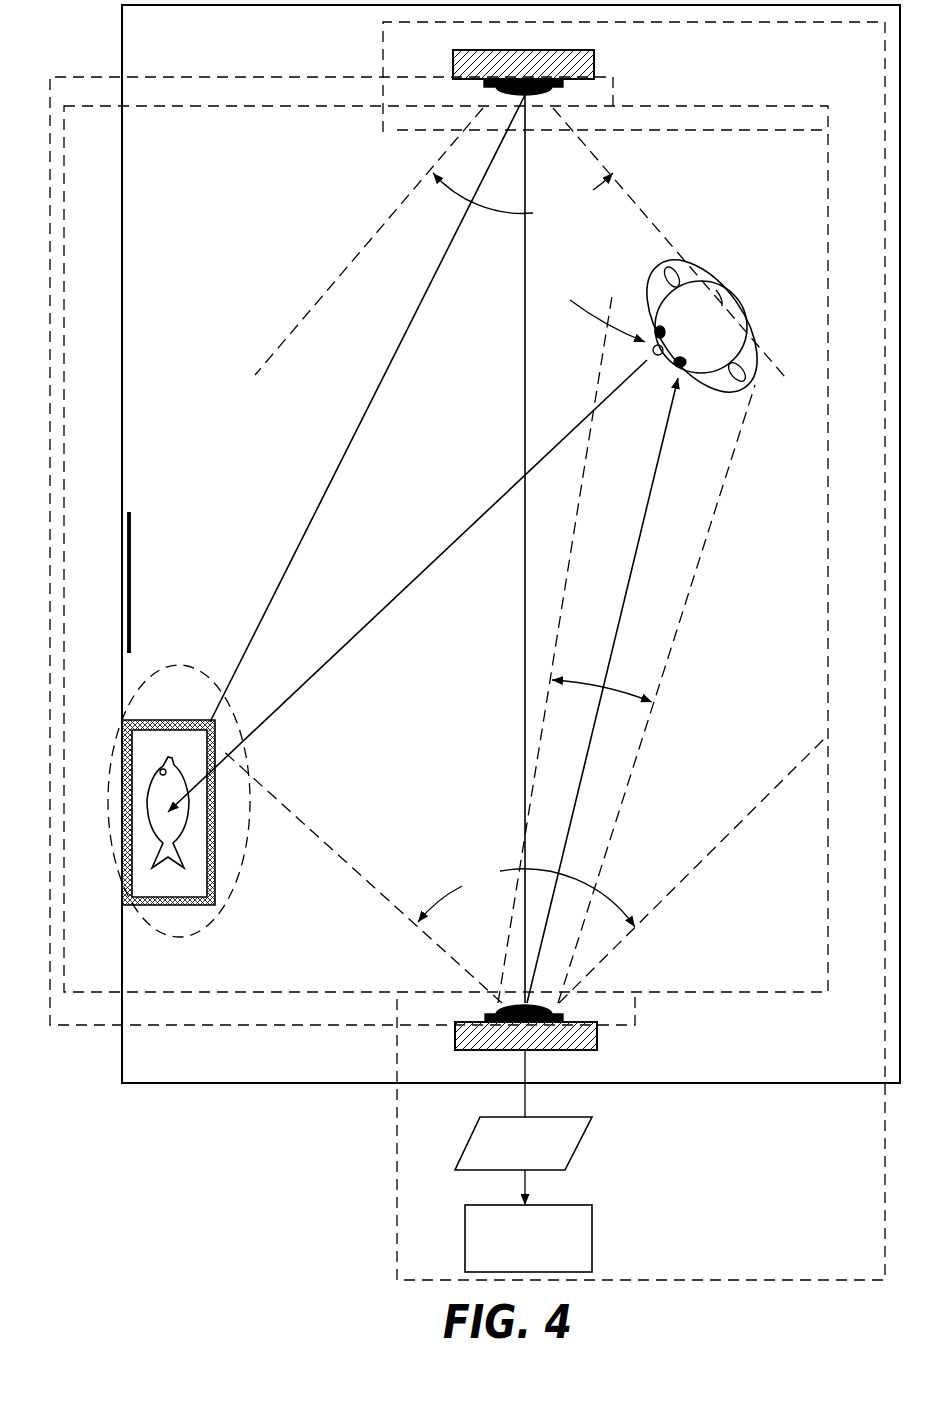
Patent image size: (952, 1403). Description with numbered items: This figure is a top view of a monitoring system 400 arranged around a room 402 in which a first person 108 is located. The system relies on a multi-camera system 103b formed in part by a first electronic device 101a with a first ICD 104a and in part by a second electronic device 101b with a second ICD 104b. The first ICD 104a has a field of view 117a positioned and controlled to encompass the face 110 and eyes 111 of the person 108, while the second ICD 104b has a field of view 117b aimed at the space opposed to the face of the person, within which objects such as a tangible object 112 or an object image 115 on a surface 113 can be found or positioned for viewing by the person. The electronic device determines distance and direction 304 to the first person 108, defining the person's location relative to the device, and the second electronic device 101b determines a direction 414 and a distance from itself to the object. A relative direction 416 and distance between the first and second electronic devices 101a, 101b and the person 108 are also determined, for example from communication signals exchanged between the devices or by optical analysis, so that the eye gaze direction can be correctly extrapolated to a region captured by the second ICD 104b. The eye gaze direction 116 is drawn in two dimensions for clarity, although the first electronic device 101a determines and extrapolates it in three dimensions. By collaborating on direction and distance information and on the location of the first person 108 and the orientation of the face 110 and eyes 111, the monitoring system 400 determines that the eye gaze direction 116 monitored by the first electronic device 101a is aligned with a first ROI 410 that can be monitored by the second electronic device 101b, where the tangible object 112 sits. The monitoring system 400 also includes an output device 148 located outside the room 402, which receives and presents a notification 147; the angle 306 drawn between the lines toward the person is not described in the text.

The room 402 is at (168, 43).
The monitoring system 400 is at (811, 1265).
The multi-camera system 103b is at (345, 100).
The first electronic device 101a is at (598, 1035).
The second electronic device 101b is at (596, 64).
The first ICD 104a is at (562, 1013).
The second ICD 104b is at (565, 88).
The relative direction 416 is at (526, 255).
The field of view of first ICD 117a is at (524, 869).
The field of view of second ICD 117b is at (533, 213).
The distance and direction to first person 304 is at (700, 560).
The angle of narrowed field of view 306 is at (632, 690).
The direction to object 414 is at (359, 430).
The eye gaze direction 116 is at (372, 618).
The eyes 111 is at (688, 392).
The face 110 is at (597, 309).
The first person 108 is at (724, 300).
The first ROI 410 is at (225, 915).
The tangible object 112 is at (182, 865).
The surface 113 is at (131, 655).
The object image 115 is at (131, 582).
The notification 147 is at (512, 1165).
The output device 148 is at (577, 1258).